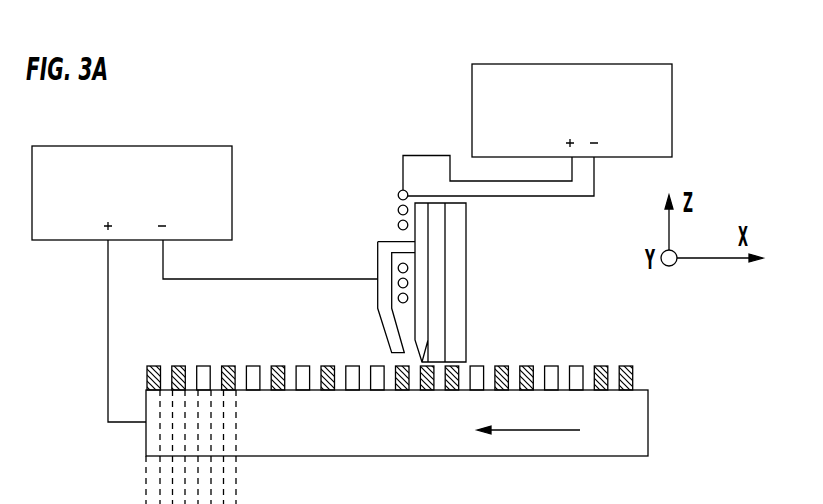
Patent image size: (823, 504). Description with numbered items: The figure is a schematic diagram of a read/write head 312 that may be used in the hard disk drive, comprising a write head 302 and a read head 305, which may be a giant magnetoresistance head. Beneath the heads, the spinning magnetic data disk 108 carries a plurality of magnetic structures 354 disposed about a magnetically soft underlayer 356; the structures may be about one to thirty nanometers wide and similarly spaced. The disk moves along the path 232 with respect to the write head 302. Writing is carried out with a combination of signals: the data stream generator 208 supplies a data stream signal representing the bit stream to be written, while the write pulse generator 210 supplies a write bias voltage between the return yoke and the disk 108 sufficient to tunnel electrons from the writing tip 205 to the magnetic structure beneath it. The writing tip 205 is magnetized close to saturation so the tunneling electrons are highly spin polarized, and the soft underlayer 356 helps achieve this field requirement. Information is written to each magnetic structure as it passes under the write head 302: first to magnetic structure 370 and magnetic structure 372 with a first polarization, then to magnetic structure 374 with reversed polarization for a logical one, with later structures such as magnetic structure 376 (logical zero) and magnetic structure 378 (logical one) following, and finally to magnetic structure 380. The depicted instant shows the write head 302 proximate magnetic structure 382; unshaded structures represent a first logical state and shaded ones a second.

The magnetic data disk 108 is at (124, 446).
The writing tip 205 is at (423, 342).
The data stream generator 208 is at (510, 64).
The write pulse generator 210 is at (55, 146).
The path 232 is at (510, 430).
The write head 302 is at (378, 250).
The read head 305 is at (466, 259).
The read/write head 312 is at (306, 82).
The magnetic structures 354 is at (663, 369).
The magnetically soft underlayer 356 is at (674, 407).
The magnetic structure 370 is at (146, 366).
The magnetic structure 372 is at (180, 366).
The magnetic structure 374 is at (203, 366).
The magnetic structure 376 is at (228, 366).
The magnetic structure 378 is at (258, 366).
The magnetic structure 380 is at (627, 366).
The magnetic structure 382 is at (432, 376).